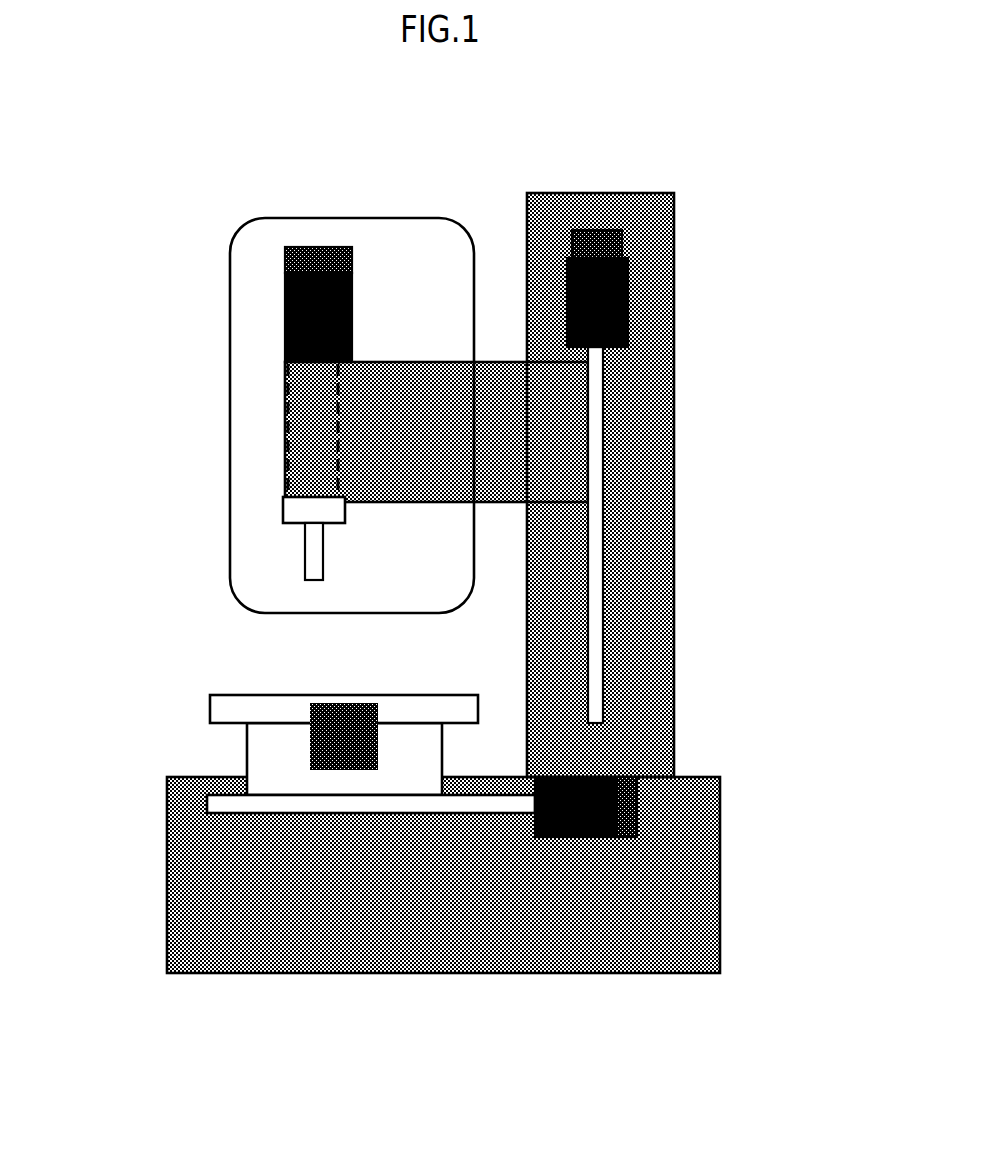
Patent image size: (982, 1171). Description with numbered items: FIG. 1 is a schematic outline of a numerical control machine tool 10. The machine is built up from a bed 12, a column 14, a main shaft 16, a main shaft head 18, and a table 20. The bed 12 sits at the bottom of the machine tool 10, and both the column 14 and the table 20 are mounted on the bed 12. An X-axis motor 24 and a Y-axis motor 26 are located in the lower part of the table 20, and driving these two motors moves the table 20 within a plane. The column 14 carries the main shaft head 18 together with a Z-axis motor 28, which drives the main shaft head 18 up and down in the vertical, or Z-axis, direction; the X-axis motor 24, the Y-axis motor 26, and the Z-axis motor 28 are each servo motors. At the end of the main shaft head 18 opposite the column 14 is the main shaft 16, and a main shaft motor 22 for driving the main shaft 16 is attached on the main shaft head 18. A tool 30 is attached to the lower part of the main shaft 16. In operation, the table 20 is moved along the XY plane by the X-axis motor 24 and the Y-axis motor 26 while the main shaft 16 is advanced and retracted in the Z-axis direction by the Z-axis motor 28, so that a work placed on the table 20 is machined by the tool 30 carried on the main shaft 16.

The numerical control machine tool 10 is at (745, 146).
The bed 12 is at (722, 890).
The column 14 is at (675, 550).
The main shaft 16 is at (303, 218).
The main shaft head 18 is at (285, 415).
The table 20 is at (240, 694).
The main shaft motor 22 is at (283, 317).
The X-axis motor 24 is at (310, 748).
The Y-axis motor 26 is at (637, 798).
The Z-axis motor 28 is at (628, 289).
The tool 30 is at (305, 567).